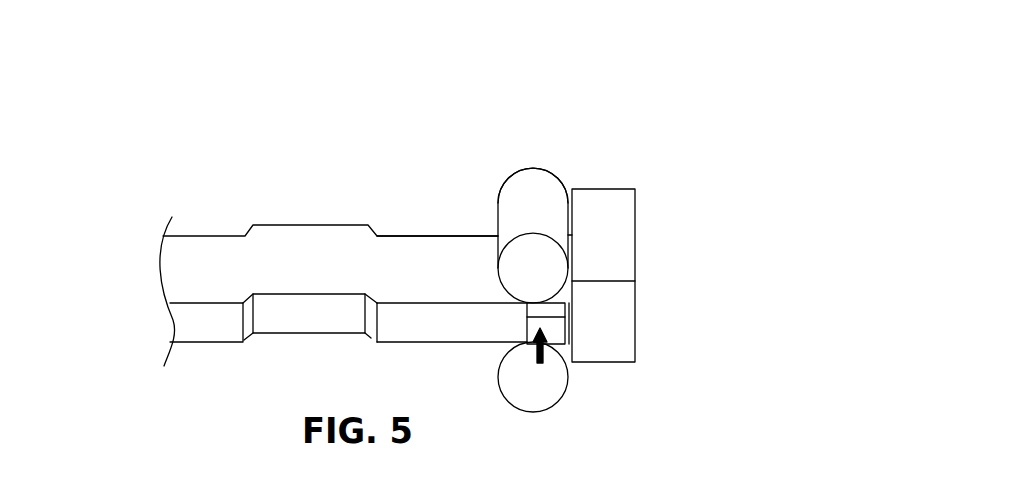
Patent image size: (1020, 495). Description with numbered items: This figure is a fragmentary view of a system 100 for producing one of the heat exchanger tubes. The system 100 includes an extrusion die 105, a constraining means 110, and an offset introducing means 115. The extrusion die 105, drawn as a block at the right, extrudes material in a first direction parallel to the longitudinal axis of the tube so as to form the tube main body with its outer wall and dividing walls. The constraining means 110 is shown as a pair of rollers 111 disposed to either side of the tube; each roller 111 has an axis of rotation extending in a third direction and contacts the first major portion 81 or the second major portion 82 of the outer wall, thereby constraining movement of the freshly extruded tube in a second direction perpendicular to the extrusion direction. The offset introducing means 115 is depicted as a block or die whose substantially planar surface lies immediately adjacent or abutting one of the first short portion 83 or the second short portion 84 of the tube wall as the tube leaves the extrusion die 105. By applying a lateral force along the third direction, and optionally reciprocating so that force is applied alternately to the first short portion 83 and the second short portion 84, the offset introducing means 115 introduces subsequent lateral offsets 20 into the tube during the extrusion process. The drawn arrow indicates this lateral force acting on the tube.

The system 100 is at (604, 98).
The constraining means 110 is at (492, 186).
The rollers 111 is at (533, 176).
The extrusion die 105 is at (620, 232).
The offset introducing means 115 is at (552, 329).
The first major portion 81 is at (311, 248).
The first short portion 83 is at (408, 235).
The second major portion 82 is at (300, 334).
The second short portion 84 is at (427, 329).
The lateral offsets 20 is at (246, 340).